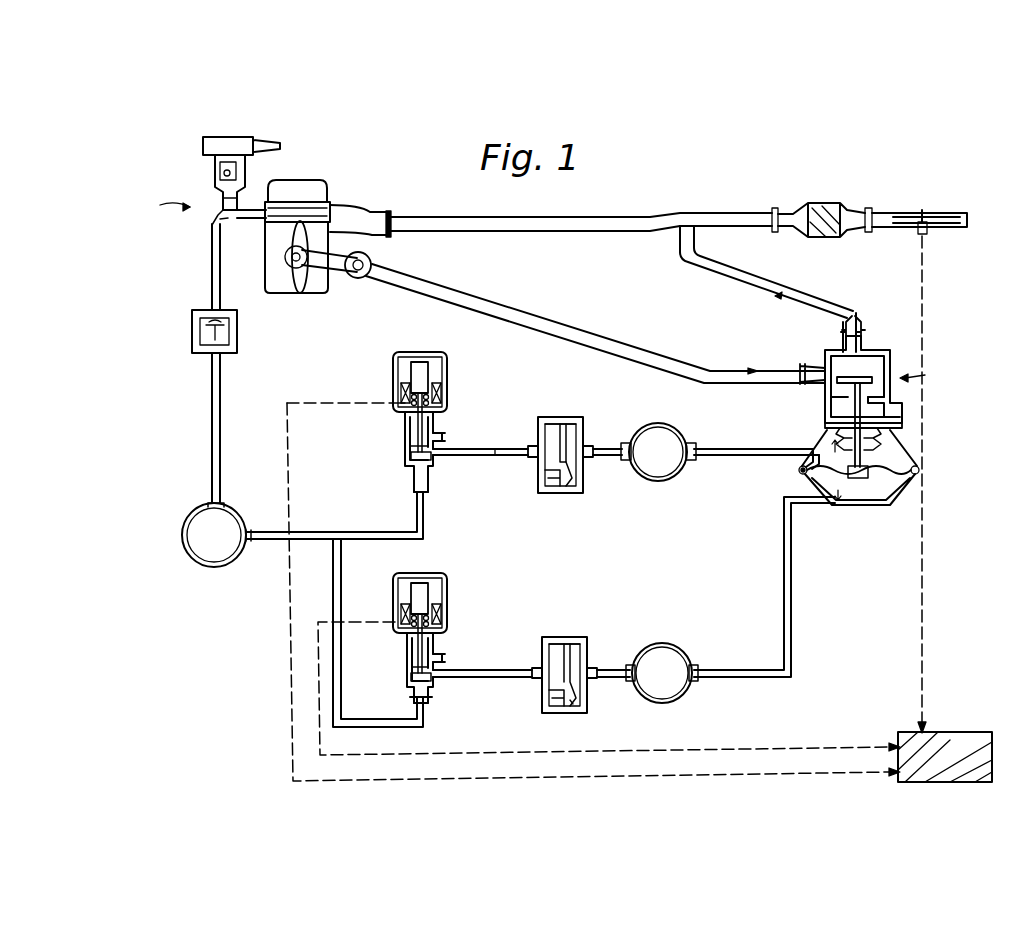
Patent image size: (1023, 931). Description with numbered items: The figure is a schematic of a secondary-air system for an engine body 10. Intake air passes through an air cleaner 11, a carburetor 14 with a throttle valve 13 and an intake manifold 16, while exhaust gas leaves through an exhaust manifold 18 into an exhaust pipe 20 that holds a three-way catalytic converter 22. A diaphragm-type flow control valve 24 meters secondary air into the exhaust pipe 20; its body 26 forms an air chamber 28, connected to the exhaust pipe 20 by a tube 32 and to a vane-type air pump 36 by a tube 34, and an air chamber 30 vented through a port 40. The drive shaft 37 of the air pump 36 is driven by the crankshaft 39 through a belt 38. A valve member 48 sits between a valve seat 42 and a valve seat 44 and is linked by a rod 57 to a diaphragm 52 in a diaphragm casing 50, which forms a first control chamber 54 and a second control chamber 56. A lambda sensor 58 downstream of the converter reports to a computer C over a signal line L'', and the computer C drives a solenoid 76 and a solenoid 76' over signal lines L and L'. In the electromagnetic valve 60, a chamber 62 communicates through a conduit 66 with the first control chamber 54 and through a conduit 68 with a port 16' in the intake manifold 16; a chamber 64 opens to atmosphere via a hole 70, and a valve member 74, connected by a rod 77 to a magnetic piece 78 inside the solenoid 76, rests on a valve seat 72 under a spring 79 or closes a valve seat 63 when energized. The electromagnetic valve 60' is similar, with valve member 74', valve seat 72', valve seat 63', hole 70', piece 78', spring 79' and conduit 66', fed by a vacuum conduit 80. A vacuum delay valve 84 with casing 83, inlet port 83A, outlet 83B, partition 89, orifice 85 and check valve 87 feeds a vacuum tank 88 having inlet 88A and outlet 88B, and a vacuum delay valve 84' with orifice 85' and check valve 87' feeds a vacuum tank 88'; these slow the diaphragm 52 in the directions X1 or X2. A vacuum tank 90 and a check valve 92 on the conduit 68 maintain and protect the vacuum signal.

The engine body 10 is at (300, 184).
The air cleaner 11 is at (205, 140).
The throttle valve 13 is at (245, 170).
The carburetor 14 is at (152, 213).
The intake manifold 16 is at (246, 231).
The port 16' is at (193, 219).
The exhaust manifold 18 is at (365, 214).
The exhaust pipe 20 is at (521, 209).
The three-way catalytic converter 22 is at (823, 205).
The flow control valve 24 is at (966, 387).
The body 26 is at (868, 356).
The air chamber 28 is at (875, 365).
The air chamber 30 is at (832, 398).
The tube 32 is at (800, 300).
The tube 34 is at (626, 350).
The air pump 36 is at (370, 254).
The drive shaft 37 is at (360, 278).
The belt 38 is at (330, 276).
The crankshaft 39 is at (293, 285).
The port 40 is at (872, 432).
The valve seat 42 is at (872, 410).
The valve seat 44 is at (860, 332).
The valve member 48 is at (884, 392).
The diaphragm casing 50 is at (890, 510).
The diaphragm 52 is at (902, 490).
The first control chamber 54 is at (812, 456).
The second control chamber 56 is at (801, 474).
The rod 57 is at (919, 468).
The lambda sensor 58 is at (930, 232).
The electromagnetic valve 60 is at (449, 374).
The chamber 62 is at (492, 456).
The valve seat 63 is at (445, 488).
The chamber 64 is at (410, 442).
The conduit 66 is at (626, 448).
The conduit 68 is at (211, 278).
The hole 70 is at (442, 437).
The valve seat 72 is at (464, 429).
The valve member 74 is at (367, 490).
The solenoid 76 is at (388, 386).
The rod 77 is at (405, 430).
The piece 78 is at (382, 366).
The spring 79 is at (346, 415).
The vacuum conduit 80 is at (334, 590).
The casing 83 is at (566, 440).
The inlet port 83A is at (530, 445).
The outlet 83B is at (588, 452).
The vacuum delay valve 84 is at (560, 485).
The orifice 85 is at (583, 425).
The check valve 87 is at (592, 484).
The vacuum tank 88 is at (680, 472).
The inlet 88A is at (628, 443).
The outlet 88B is at (692, 443).
The partition 89 is at (552, 428).
The vacuum tank 90 is at (200, 556).
The check valve 92 is at (196, 330).
The electromagnetic valve 60' is at (453, 592).
The valve seat 63' is at (446, 704).
The vacuum conduit 66' is at (636, 609).
The hole 70' is at (459, 660).
The valve seat 72' is at (472, 657).
The valve member 74' is at (387, 667).
The solenoid 76' is at (397, 599).
The piece 78' is at (458, 597).
The spring 79' is at (386, 635).
The vacuum delay valve 84' is at (564, 643).
The orifice 85' is at (594, 640).
The check valve 87' is at (596, 726).
The vacuum tank 88' is at (682, 657).
The computer C is at (945, 757).
The signal line L is at (593, 609).
The signal line L' is at (609, 688).
The signal line L'' is at (953, 484).
The arrow X1 is at (830, 440).
The arrow X2 is at (833, 502).